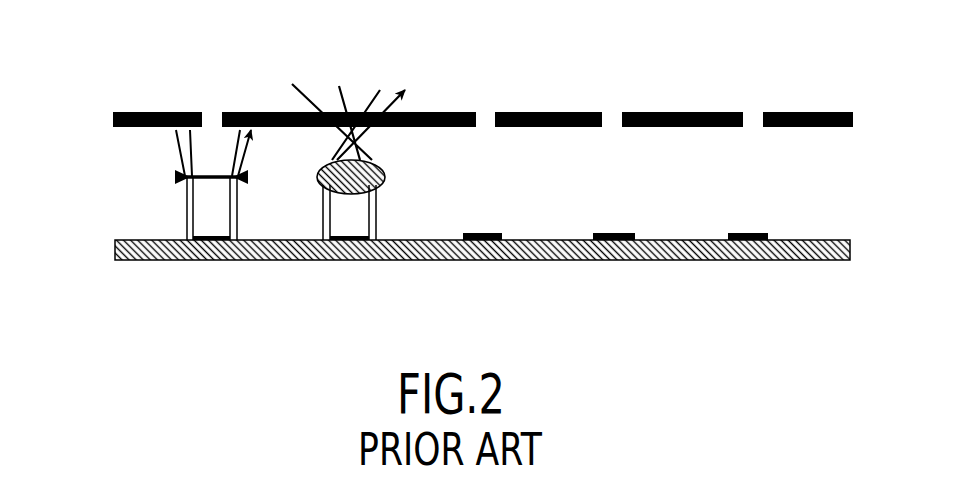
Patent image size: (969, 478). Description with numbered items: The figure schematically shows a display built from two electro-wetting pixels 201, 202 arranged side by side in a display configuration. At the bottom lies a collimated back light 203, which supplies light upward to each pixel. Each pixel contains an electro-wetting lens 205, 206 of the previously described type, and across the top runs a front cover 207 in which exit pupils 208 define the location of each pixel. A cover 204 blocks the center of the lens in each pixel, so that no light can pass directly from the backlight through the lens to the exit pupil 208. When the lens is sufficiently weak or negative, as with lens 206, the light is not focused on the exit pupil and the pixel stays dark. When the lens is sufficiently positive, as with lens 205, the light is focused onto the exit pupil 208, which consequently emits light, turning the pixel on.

The pixel 201 is at (217, 268).
The pixel 202 is at (367, 268).
The collimated back light 203 is at (850, 246).
The cover 204 is at (216, 237).
The electro-wetting lens 205 is at (386, 177).
The electro-wetting lens 206 is at (175, 176).
The front cover 207 is at (686, 112).
The exit pupil 208 is at (358, 100).